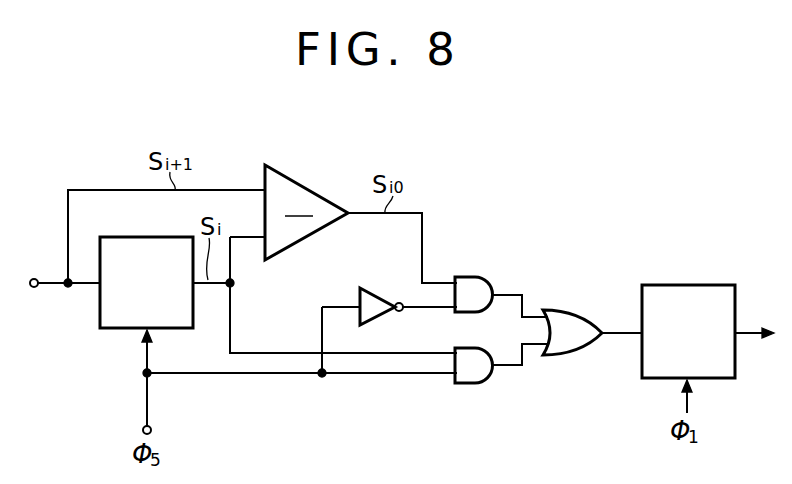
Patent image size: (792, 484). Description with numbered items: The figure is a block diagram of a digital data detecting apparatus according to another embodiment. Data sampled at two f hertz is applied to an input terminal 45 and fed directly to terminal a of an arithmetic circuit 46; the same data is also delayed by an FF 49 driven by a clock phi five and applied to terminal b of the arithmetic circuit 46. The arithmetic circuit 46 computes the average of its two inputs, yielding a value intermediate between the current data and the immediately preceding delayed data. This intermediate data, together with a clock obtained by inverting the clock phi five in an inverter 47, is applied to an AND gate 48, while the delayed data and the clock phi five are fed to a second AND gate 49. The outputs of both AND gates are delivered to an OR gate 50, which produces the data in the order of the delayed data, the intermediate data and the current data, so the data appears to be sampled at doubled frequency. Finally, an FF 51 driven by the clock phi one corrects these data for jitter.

The input terminal 45 is at (34, 279).
The arithmetic circuit 46 is at (300, 184).
The inverter 47 is at (372, 292).
The AND gate 48 is at (473, 277).
The FF / AND gate 49 is at (147, 227).
The OR gate 50 is at (568, 312).
The FF 51 is at (690, 285).